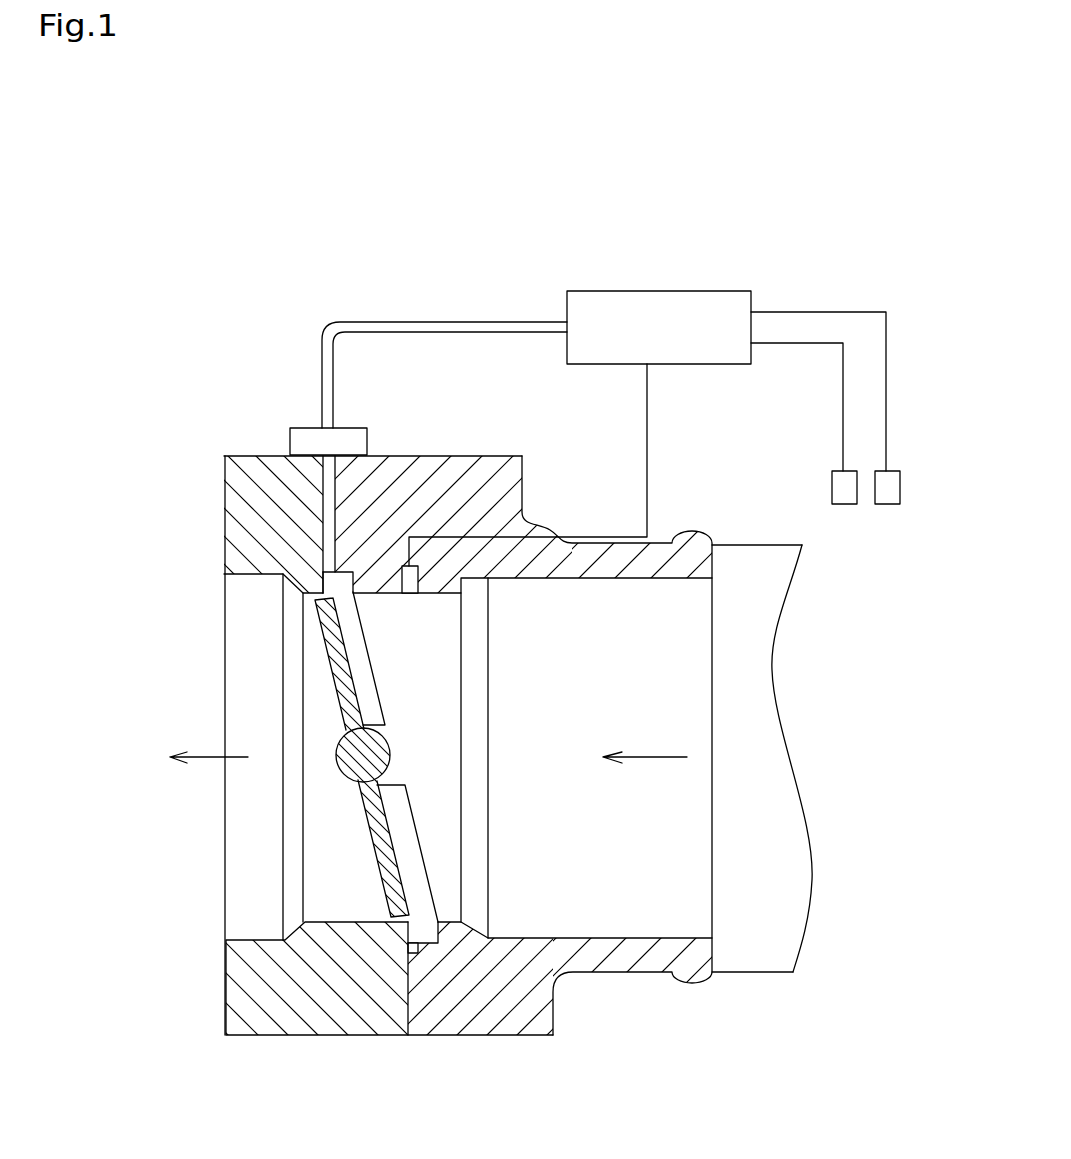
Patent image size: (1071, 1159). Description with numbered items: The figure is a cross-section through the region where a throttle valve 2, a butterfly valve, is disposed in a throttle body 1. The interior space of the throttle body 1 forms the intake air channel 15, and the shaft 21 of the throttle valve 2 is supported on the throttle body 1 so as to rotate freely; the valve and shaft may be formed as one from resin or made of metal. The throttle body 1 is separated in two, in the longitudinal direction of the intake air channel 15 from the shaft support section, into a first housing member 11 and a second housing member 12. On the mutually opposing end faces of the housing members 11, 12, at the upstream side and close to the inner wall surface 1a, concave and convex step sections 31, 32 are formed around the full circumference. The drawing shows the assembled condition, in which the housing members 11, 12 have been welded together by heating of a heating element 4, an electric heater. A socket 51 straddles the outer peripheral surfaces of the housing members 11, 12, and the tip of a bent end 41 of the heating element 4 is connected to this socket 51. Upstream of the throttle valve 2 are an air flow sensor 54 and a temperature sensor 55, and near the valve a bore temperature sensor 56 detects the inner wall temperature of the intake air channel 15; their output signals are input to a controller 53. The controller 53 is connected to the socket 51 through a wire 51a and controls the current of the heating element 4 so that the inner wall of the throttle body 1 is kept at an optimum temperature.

The throttle body 1 is at (632, 1013).
The inner wall surface 1a is at (344, 592).
The throttle valve 2 is at (330, 635).
The heating element 4 is at (322, 571).
The first housing member 11 is at (510, 456).
The second housing member 12 is at (233, 455).
The intake air channel 15 is at (558, 727).
The shaft 21 is at (340, 768).
The concave step section 31 is at (422, 943).
The convex step section 32 is at (408, 946).
The bent end 41 is at (322, 478).
The socket 51 is at (345, 427).
The wire 51a is at (463, 322).
The controller 53 is at (685, 290).
The air flow sensor 54 is at (887, 504).
The temperature sensor 55 is at (838, 504).
The bore temperature sensor 56 is at (408, 594).